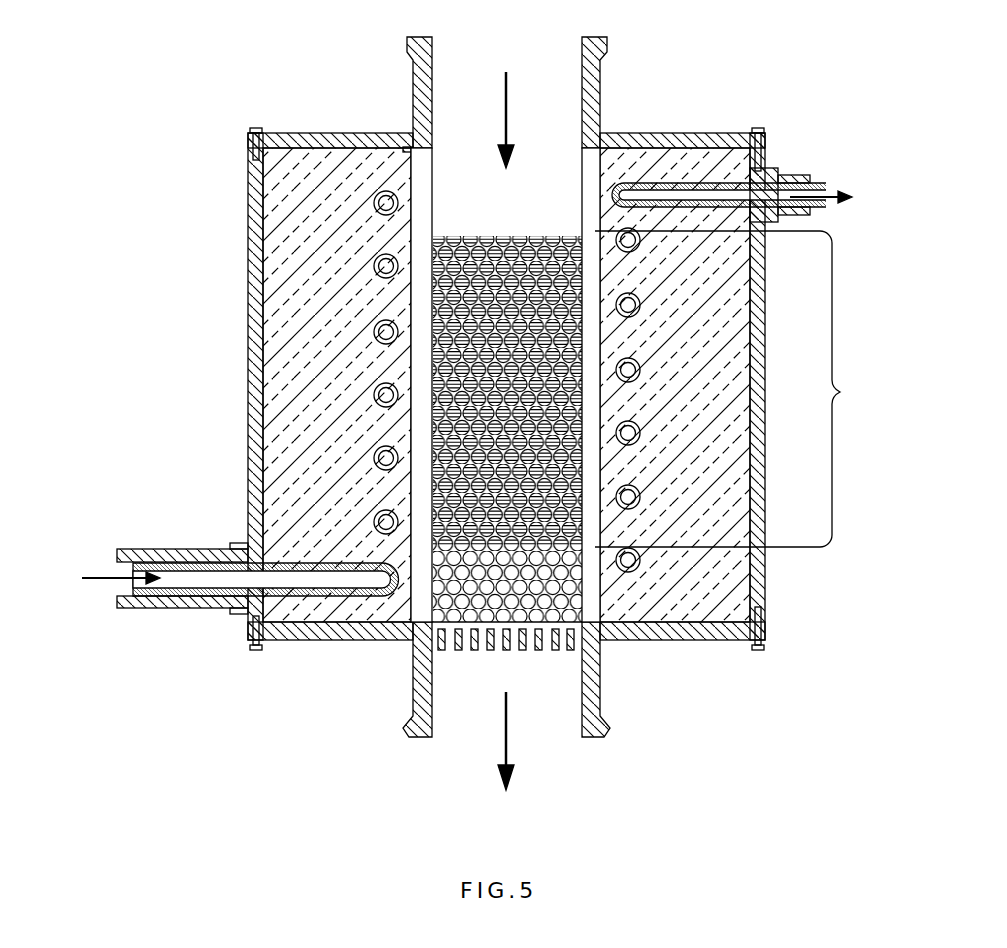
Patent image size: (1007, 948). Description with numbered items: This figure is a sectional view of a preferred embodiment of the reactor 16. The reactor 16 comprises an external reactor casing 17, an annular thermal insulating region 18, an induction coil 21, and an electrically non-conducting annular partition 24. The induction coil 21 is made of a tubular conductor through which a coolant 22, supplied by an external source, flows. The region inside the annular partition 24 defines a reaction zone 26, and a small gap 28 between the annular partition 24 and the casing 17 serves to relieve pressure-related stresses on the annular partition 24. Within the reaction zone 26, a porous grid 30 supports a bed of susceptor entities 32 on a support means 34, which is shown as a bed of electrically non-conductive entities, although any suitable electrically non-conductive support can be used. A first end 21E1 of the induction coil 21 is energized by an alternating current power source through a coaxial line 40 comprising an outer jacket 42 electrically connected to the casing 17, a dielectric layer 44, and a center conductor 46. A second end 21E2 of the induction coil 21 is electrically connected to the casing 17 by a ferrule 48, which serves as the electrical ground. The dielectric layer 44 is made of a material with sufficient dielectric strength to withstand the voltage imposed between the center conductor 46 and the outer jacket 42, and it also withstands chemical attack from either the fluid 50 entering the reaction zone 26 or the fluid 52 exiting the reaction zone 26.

The reactor 16 is at (228, 52).
The external reactor casing 17 is at (262, 198).
The annular thermal insulating region 18 is at (345, 185).
The induction coil 21 is at (385, 382).
The first end of induction coil 21E1 is at (322, 565).
The second end of induction coil 21E2 is at (705, 183).
The coolant 22 is at (110, 577).
The electrically non-conducting annular partition 24 is at (597, 165).
The reaction zone 26 is at (738, 389).
The small gap 28 is at (405, 628).
The porous grid 30 is at (490, 650).
The bed of susceptor entities 32 is at (504, 219).
The support means 34 is at (605, 645).
The coaxial line 40 is at (241, 631).
The outer jacket 42 is at (213, 598).
The dielectric layer 44 is at (190, 592).
The center conductor 46 is at (177, 567).
The ferrule 48 is at (790, 178).
The fluid entering reaction zone 50 is at (505, 100).
The fluid exiting reaction zone 52 is at (510, 740).